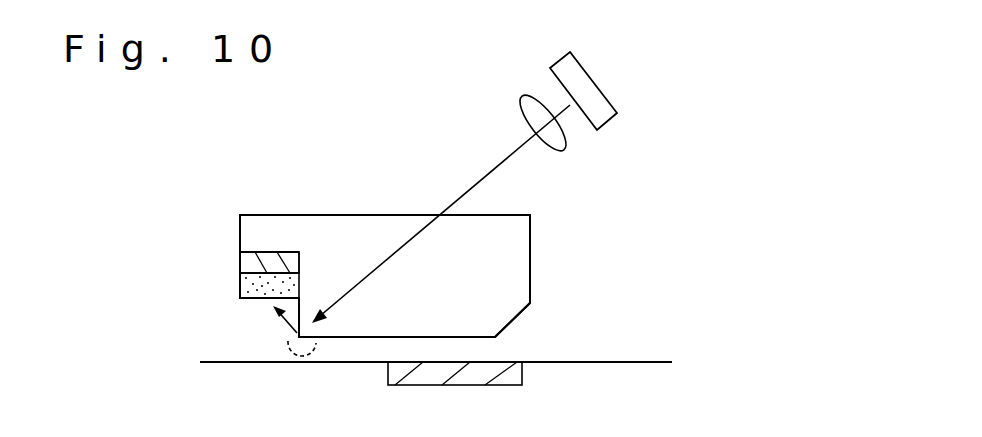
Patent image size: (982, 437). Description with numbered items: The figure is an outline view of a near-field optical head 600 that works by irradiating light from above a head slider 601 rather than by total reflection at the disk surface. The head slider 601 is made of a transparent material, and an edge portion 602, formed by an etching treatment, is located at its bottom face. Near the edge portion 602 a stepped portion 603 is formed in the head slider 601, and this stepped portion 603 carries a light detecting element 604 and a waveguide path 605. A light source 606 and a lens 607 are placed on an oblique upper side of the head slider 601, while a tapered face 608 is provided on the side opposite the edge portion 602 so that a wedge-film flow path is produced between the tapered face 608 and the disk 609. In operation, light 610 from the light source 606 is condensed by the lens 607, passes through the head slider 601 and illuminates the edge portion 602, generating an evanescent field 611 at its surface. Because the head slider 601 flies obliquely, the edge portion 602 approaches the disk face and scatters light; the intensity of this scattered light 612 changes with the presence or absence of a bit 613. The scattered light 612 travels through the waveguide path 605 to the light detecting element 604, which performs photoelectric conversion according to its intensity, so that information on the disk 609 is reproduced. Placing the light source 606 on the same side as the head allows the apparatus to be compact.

The near-field optical head 600 is at (164, 182).
The head slider 601 is at (522, 238).
The edge portion 602 is at (302, 333).
The stepped portion 603 is at (281, 252).
The light detecting element 604 is at (250, 262).
The waveguide path 605 is at (245, 288).
The light source 606 is at (597, 102).
The lens 607 is at (563, 145).
The tapered face 608 is at (515, 320).
The disk 609 is at (642, 377).
The light 610 is at (482, 177).
The evanescent field 611 is at (287, 347).
The scattered light 612 is at (283, 327).
The bit 613 is at (517, 372).